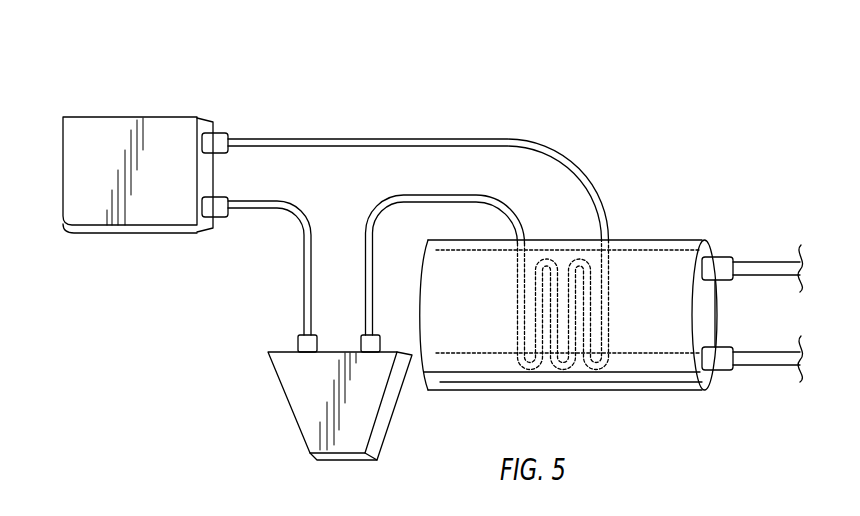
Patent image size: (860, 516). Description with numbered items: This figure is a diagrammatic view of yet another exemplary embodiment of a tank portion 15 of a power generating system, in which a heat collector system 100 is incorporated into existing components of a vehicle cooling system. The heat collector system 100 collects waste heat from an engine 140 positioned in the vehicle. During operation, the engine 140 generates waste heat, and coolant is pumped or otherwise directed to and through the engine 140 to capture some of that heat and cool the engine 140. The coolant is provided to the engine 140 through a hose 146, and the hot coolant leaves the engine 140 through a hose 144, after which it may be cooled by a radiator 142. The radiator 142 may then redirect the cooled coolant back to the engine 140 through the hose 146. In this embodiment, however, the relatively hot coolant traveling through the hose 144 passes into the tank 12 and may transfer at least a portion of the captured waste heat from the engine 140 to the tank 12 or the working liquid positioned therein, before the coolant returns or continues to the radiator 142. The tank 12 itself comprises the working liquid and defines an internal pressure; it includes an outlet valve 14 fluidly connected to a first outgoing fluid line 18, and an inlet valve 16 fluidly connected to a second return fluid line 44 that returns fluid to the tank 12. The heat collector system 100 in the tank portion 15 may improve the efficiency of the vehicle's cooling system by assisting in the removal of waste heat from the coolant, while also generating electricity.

The heat collector system 100 is at (112, 74).
The tank portion 15 is at (650, 131).
The tank 12 is at (650, 380).
The outlet valve 14 is at (722, 262).
The inlet valve 16 is at (717, 368).
The first outgoing fluid line 18 is at (775, 272).
The second return fluid line 44 is at (758, 362).
The engine 140 is at (287, 380).
The radiator 142 is at (140, 228).
The hose 144 is at (367, 235).
The hose 146 is at (300, 297).